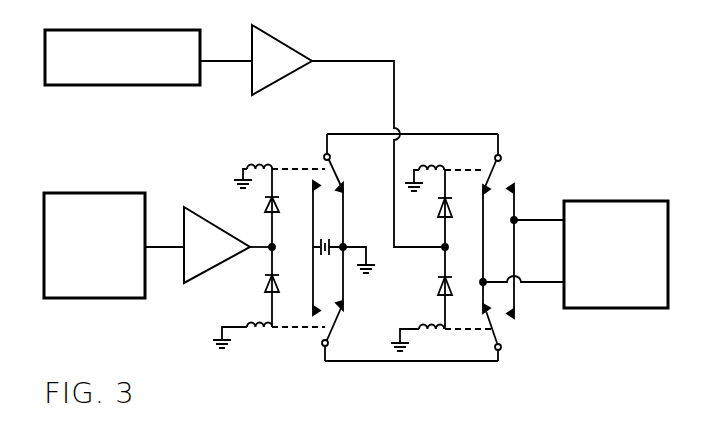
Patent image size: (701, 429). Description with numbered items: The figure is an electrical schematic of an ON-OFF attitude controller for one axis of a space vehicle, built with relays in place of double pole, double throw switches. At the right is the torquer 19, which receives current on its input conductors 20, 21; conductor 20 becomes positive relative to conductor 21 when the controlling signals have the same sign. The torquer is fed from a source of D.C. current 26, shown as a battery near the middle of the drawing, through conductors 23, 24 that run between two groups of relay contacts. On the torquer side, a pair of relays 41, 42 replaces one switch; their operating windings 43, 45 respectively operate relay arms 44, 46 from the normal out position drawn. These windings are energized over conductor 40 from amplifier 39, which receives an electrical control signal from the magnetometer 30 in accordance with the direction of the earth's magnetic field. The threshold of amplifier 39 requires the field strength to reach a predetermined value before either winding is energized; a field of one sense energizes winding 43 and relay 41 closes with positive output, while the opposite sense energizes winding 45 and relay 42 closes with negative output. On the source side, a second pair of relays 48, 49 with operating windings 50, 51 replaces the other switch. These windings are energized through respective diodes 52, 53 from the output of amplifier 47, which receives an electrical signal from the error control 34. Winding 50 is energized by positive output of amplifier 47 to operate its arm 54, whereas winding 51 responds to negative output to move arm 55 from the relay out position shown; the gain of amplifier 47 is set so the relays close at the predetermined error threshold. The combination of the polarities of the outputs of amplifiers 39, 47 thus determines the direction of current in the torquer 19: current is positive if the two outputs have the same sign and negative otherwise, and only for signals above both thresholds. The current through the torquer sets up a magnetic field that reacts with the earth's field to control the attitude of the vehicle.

The torquer 19 is at (638, 201).
The input conductor 20 is at (533, 219).
The input conductor 21 is at (527, 282).
The conductor 23 is at (452, 134).
The conductor 24 is at (411, 375).
The source of D.C. current 26 is at (321, 255).
The magnetometer 30 is at (167, 30).
The error control 34 is at (70, 300).
The amplifier 39 is at (290, 46).
The conductor 40 is at (396, 104).
The relay 41 is at (522, 164).
The relay 42 is at (522, 332).
The operating winding 43 is at (425, 168).
The relay arm 44 is at (502, 181).
The operating winding 45 is at (430, 338).
The relay arm 46 is at (500, 332).
The amplifier 47 is at (209, 275).
The relay 48 is at (230, 161).
The relay 49 is at (247, 349).
The operating winding 50 is at (221, 179).
The operating winding 51 is at (243, 343).
The diode 52 is at (280, 207).
The diode 53 is at (280, 284).
The relay arm 54 is at (338, 181).
The relay arm 55 is at (337, 321).